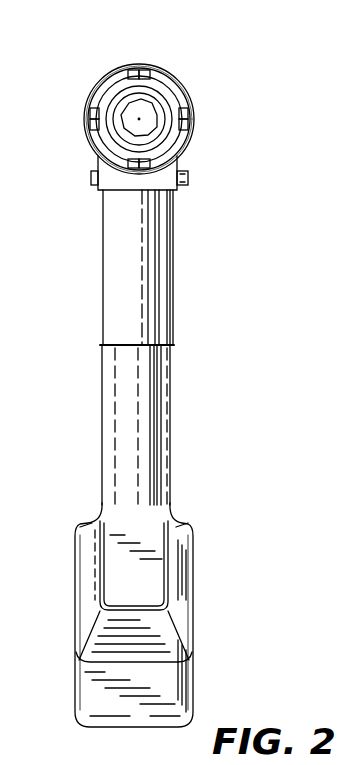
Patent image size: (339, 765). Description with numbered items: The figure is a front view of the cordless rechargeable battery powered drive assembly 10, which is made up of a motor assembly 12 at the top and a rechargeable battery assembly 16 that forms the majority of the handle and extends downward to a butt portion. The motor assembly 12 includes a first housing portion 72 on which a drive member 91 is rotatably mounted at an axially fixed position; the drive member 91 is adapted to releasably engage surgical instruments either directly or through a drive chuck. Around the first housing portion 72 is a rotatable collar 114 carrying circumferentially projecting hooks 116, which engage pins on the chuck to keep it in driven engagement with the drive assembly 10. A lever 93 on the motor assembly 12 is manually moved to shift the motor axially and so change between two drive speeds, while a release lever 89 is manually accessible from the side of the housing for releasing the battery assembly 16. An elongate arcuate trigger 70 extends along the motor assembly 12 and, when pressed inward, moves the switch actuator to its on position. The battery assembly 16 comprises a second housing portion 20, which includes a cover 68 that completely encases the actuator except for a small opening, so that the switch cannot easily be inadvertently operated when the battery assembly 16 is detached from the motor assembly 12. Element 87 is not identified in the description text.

The drive assembly 10 is at (191, 68).
The motor assembly 12 is at (134, 104).
The rechargeable battery assembly 16 is at (190, 528).
The second housing portion 20 is at (162, 425).
The cover 68 is at (147, 437).
The trigger 70 is at (168, 262).
The first housing portion 72 is at (100, 136).
The housing block 87 is at (134, 173).
The release lever 89 is at (88, 179).
The drive member 91 is at (124, 100).
The lever 93 is at (188, 174).
The collar 114 is at (106, 90).
The hooks 116 is at (197, 119).